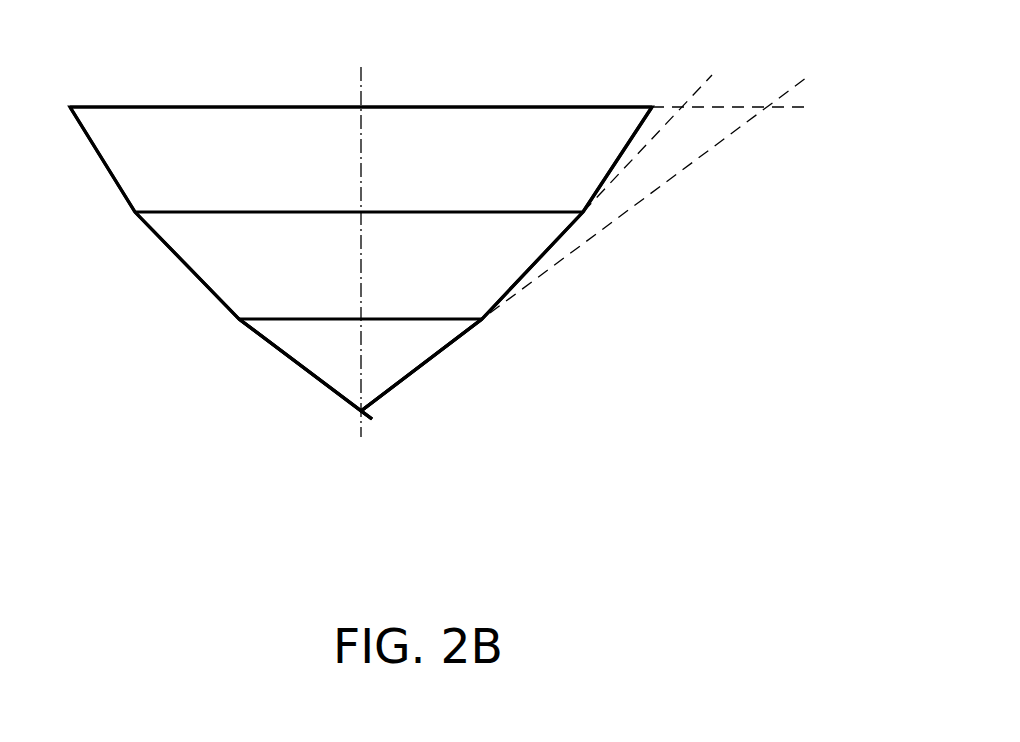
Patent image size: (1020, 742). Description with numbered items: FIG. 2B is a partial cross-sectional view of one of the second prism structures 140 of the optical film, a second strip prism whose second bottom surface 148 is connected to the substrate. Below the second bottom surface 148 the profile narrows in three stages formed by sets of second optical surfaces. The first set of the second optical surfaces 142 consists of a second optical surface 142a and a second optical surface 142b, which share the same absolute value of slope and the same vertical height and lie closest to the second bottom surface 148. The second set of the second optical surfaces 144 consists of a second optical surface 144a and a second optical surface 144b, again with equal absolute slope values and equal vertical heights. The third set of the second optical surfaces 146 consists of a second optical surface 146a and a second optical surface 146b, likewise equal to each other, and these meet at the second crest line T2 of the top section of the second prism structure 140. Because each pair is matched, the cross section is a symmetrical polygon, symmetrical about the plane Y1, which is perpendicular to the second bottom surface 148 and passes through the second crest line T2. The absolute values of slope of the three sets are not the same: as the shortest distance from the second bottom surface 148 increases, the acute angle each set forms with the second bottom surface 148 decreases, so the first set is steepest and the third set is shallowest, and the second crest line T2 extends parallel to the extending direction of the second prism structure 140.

The second prism structure 140 is at (108, 40).
The first set of the second optical surfaces 142 is at (480, 160).
The second optical surface 142a is at (86, 144).
The second optical surface 142b is at (635, 144).
The second set of the second optical surfaces 144 is at (437, 273).
The second optical surface 144a is at (163, 250).
The second optical surface 144b is at (557, 250).
The third set of the second optical surfaces 146 is at (508, 489).
The second optical surface 146a is at (318, 380).
The second optical surface 146b is at (445, 349).
The second bottom surface 148 is at (428, 107).
The second crest line T2 is at (365, 411).
The plane Y1 is at (362, 67).